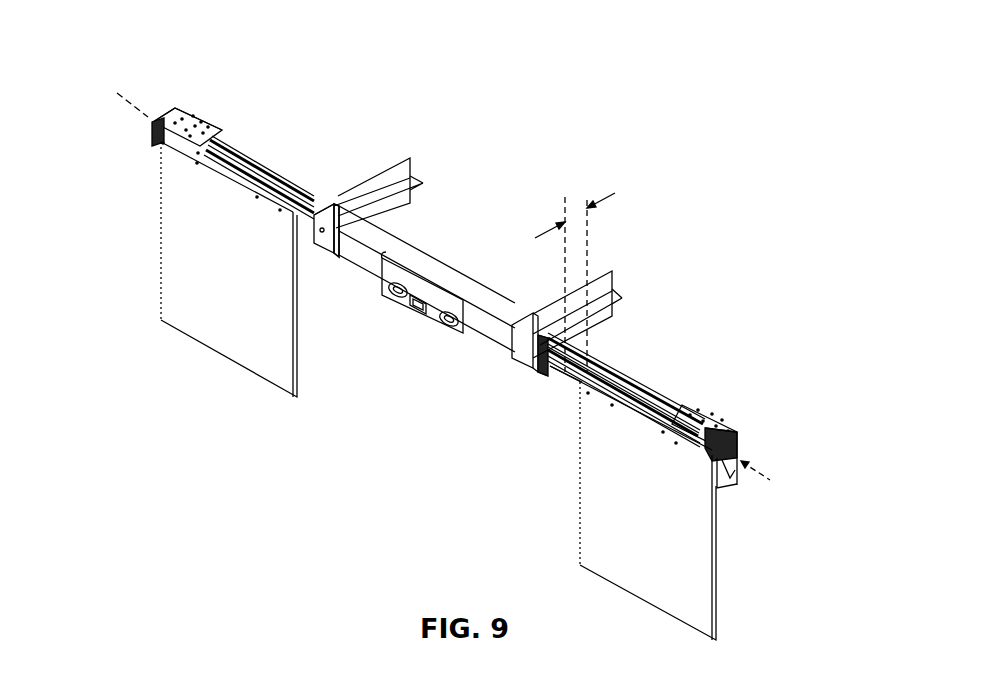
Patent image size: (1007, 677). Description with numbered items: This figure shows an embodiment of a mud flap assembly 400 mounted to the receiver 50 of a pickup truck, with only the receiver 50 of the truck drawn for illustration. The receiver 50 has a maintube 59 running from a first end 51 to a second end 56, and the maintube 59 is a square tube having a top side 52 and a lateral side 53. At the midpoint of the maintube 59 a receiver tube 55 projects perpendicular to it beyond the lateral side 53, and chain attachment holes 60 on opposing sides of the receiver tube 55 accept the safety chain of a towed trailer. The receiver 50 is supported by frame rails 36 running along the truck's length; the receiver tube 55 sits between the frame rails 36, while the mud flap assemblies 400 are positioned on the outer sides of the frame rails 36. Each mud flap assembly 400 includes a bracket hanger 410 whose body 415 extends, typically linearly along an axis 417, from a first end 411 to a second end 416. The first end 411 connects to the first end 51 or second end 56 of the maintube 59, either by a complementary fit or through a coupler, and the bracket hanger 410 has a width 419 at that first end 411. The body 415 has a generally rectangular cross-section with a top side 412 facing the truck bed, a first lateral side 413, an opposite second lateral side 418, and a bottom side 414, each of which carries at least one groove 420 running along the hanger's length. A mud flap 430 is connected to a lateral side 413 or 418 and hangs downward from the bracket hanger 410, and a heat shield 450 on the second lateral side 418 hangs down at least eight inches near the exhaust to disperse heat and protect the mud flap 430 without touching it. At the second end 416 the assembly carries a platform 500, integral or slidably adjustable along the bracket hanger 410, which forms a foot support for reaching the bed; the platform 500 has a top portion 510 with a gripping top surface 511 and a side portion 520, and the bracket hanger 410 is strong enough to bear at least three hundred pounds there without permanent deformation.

The frame rail 36 is at (397, 173).
The receiver 50 is at (445, 283).
The first end 51 is at (330, 203).
The top side 52 is at (342, 210).
The lateral side 53 is at (357, 250).
The receiver tube 55 is at (412, 313).
The second end 56 is at (548, 318).
The maintube 59 is at (455, 268).
The chain attachment hole 60 is at (387, 297).
The mud flap assembly 400 is at (686, 194).
The bracket hanger 410 is at (243, 157).
The first end 411 is at (535, 370).
The top side 412 is at (648, 392).
The first lateral side 413 is at (545, 367).
The bottom side 414 is at (717, 472).
The body 415 is at (631, 359).
The second end 416 is at (743, 450).
The axis 417 is at (772, 480).
The second lateral side 418 is at (738, 437).
The width 419 is at (562, 228).
The groove 420 is at (582, 382).
The mud flap 430 is at (207, 332).
The heat shield 450 is at (728, 478).
The platform 500 is at (197, 120).
The top portion 510 is at (178, 112).
The top surface 511 is at (203, 123).
The side portion 520 is at (152, 127).